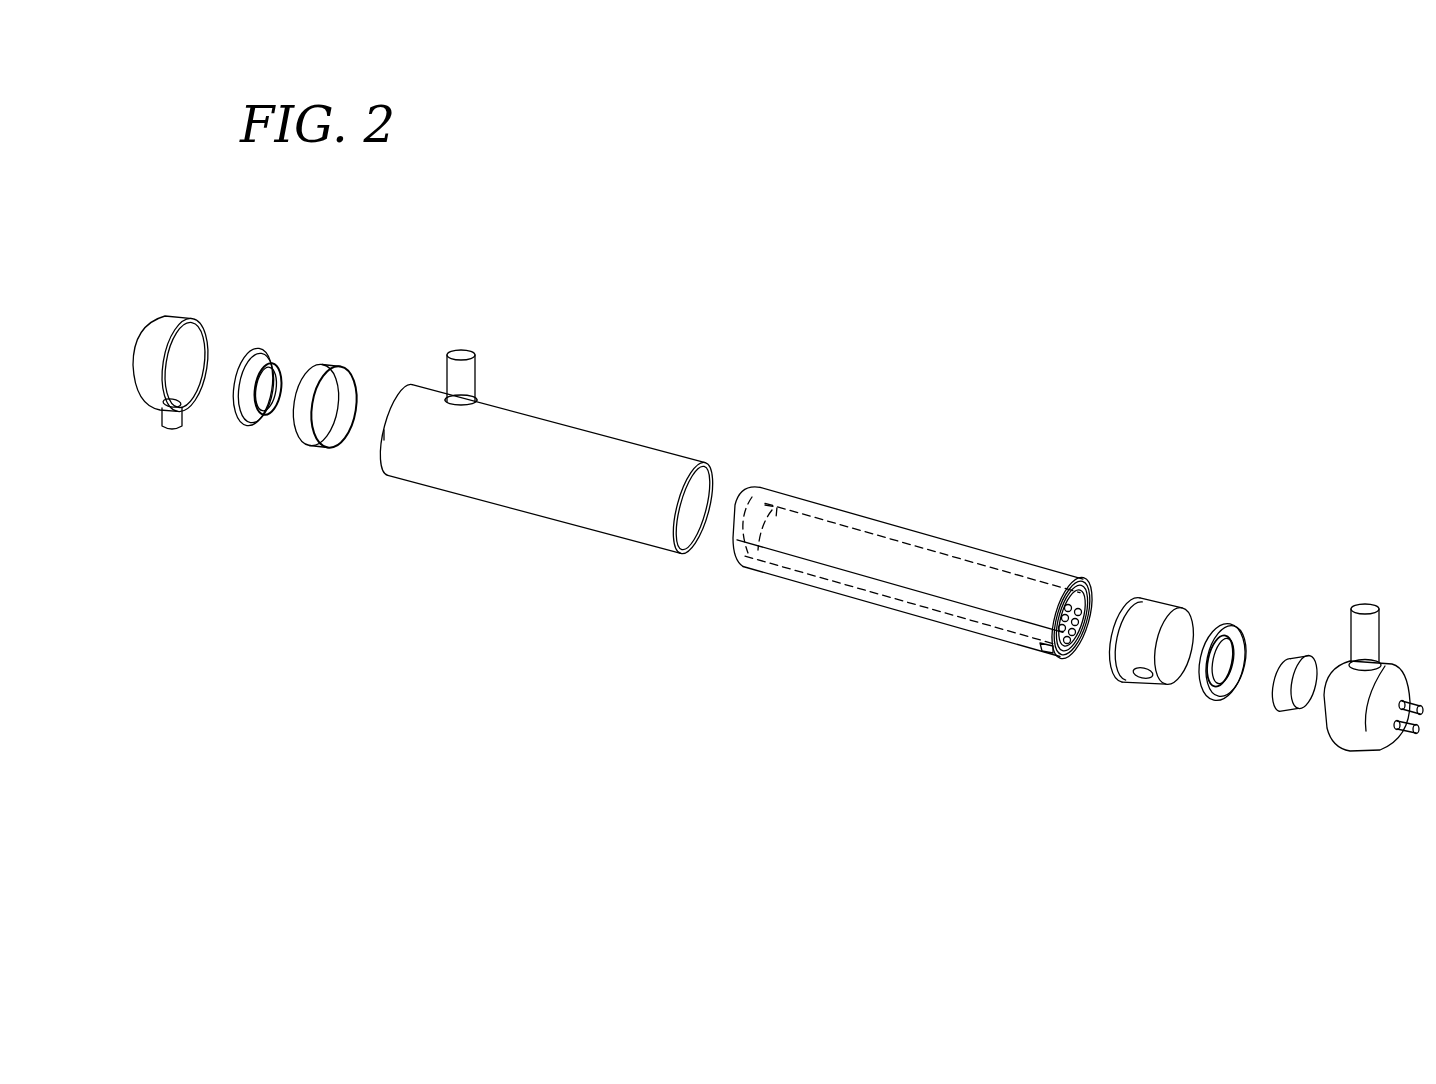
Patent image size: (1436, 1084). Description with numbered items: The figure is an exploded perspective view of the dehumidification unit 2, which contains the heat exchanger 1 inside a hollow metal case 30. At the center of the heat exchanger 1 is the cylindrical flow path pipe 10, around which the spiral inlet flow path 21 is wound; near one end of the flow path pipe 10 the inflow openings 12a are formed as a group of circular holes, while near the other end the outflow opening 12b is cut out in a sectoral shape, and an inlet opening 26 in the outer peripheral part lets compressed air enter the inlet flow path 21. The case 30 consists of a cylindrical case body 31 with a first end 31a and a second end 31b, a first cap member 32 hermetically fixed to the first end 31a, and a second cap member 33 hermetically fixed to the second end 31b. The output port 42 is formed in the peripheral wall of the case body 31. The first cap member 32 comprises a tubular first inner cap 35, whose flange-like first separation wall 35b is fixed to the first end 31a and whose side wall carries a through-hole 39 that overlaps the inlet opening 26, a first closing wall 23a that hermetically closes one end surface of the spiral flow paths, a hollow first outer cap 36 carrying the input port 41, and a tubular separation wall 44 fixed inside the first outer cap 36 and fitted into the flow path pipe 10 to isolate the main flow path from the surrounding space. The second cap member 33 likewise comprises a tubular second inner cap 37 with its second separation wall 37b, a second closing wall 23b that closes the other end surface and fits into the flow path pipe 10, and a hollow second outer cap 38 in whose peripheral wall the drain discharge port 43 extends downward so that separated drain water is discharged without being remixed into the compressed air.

The heat exchanger 1 is at (960, 520).
The dehumidification unit 2 is at (975, 357).
The flow path pipe 10 is at (1088, 597).
The inflow openings 12a is at (1087, 640).
The outflow opening 12b is at (748, 510).
The inlet flow path 21 is at (863, 557).
The first closing wall 23a is at (1215, 700).
The second closing wall 23b is at (247, 420).
The inlet opening 26 is at (1050, 657).
The case 30 is at (573, 650).
The case body 31 is at (527, 470).
The first end 31a is at (695, 553).
The second end 31b is at (385, 453).
The first cap member 32 is at (1432, 582).
The second cap member 33 is at (414, 302).
The first inner cap 35 is at (1160, 615).
The first separation wall 35b is at (1140, 598).
The first outer cap 36 is at (1342, 732).
The second inner cap 37 is at (305, 435).
The second separation wall 37b is at (337, 370).
The second outer cap 38 is at (172, 327).
The through-hole 39 is at (1142, 680).
The input port 41 is at (1362, 632).
The output port 42 is at (460, 377).
The drain discharge port 43 is at (172, 420).
The tubular separation wall 44 is at (1285, 695).